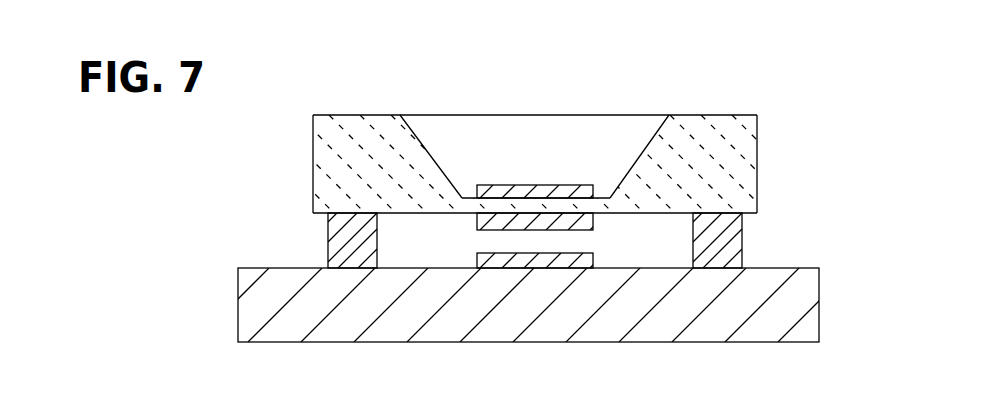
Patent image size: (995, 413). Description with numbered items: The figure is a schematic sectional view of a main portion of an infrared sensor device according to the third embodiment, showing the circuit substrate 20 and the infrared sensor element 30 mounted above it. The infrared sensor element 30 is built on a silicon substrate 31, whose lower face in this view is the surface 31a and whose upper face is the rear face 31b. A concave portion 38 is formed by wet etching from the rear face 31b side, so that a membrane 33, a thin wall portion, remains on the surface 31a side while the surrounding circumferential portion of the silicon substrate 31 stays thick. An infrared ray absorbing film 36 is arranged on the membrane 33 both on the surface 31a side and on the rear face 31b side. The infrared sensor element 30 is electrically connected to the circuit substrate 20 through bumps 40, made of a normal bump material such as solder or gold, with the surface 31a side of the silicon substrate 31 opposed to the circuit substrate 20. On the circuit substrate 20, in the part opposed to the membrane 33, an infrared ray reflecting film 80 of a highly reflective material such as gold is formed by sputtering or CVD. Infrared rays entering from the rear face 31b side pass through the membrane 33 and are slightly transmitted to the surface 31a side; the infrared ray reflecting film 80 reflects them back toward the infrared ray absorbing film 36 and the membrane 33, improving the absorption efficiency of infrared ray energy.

The circuit substrate 20 is at (800, 295).
The infrared sensor element 30 is at (555, 164).
The silicon substrate 31 is at (742, 140).
The surface 31a is at (440, 214).
The rear face 31b is at (353, 115).
The membrane 33 is at (493, 200).
The infrared ray absorbing film 36 is at (553, 192).
The concave portion 38 is at (646, 152).
The bump 40 is at (350, 248).
The infrared ray reflecting film 80 is at (582, 258).